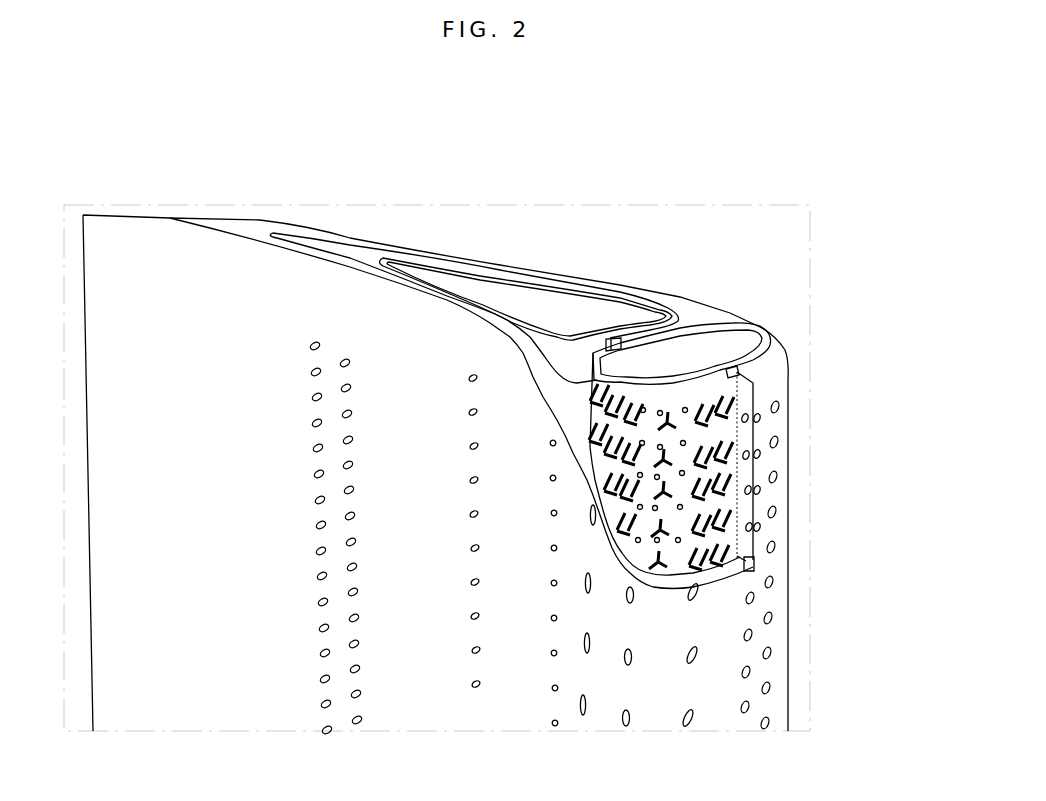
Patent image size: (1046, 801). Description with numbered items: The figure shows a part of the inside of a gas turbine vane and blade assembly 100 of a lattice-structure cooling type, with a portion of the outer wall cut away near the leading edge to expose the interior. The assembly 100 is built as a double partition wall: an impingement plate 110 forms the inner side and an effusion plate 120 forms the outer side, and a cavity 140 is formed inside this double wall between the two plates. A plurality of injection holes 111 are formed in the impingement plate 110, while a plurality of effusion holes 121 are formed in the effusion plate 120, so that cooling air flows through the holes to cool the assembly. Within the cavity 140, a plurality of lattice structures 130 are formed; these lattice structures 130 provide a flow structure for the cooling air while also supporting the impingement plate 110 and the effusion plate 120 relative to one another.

The vane and blade assembly 100 is at (412, 236).
The impingement plate 110 is at (709, 382).
The injection holes 111 is at (653, 395).
The effusion plate 120 is at (773, 350).
The effusion holes 121 is at (778, 407).
The lattice structures 130 is at (663, 460).
The cavity 140 is at (745, 365).